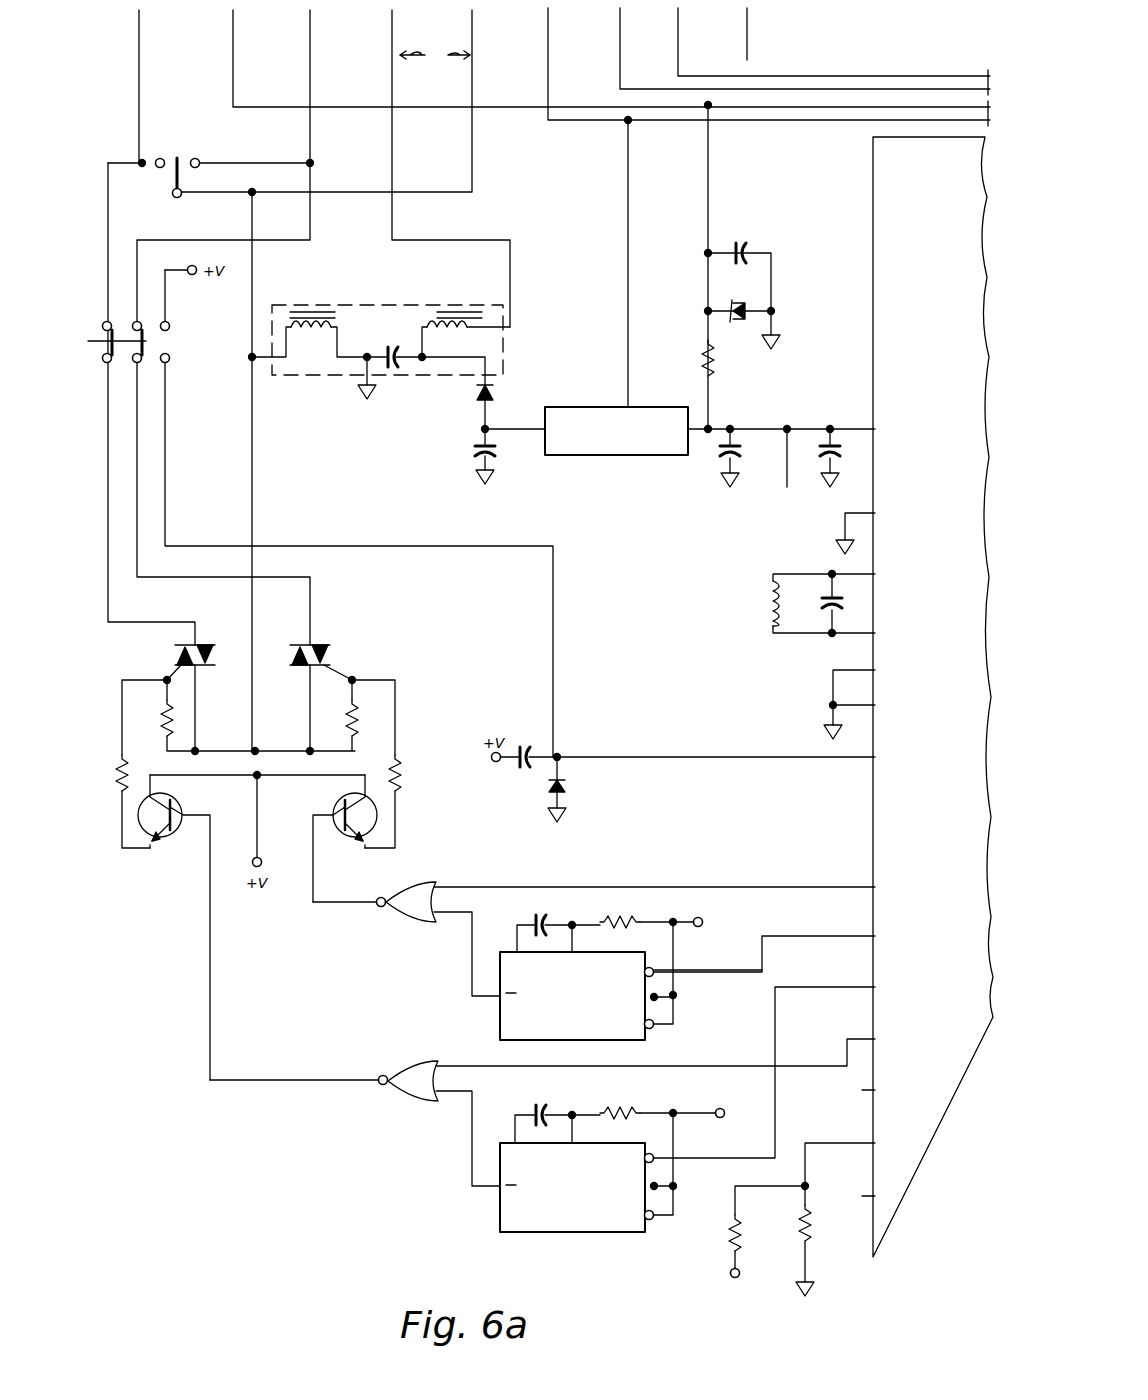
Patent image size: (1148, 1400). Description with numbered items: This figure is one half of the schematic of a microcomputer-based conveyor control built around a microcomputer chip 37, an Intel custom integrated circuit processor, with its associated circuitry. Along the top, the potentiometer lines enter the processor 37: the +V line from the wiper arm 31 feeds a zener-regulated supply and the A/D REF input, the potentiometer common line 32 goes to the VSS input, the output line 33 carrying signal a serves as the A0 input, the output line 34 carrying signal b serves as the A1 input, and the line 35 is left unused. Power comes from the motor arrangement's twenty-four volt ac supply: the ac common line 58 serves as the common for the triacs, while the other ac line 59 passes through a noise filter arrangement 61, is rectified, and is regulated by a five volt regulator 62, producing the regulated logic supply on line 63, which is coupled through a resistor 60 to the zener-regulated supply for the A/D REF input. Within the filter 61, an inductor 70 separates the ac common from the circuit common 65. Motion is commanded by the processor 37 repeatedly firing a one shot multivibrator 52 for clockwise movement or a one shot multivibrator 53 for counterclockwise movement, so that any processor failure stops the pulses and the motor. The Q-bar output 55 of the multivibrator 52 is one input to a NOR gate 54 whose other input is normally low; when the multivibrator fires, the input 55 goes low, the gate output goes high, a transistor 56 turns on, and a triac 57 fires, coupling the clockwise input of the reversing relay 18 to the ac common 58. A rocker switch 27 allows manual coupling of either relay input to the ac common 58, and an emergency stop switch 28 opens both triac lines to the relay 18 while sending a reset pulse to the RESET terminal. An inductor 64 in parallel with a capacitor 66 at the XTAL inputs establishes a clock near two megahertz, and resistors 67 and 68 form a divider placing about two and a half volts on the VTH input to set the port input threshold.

The reversing relay 18 is at (139, 35).
The rocker switch 27 is at (188, 158).
The emergency stop switch 28 is at (98, 327).
The potentiometer wiper arm line 31 is at (248, 50).
The potentiometer common line 32 is at (548, 30).
The potentiometer output line 33 is at (620, 32).
The potentiometer output line 34 is at (678, 26).
The unused potentiometer line 35 is at (747, 20).
The microcomputer chip 37 is at (873, 204).
The one shot multivibrator 52 is at (503, 1232).
The one shot multivibrator 53 is at (500, 1026).
The NOR gate 54 is at (405, 1103).
The Q-bar output 55 is at (472, 1190).
The transistor 56 is at (160, 858).
The triac 57 is at (205, 645).
The ac common line 58 is at (472, 68).
The ac line 59 is at (392, 72).
The resistor 60 is at (714, 357).
The noise filter arrangement 61 is at (360, 304).
The five volt regulator 62 is at (618, 460).
The regulated five volt supply line 63 is at (771, 428).
The inductor 64 is at (764, 612).
The circuit common 65 is at (350, 381).
The capacitor 66 is at (812, 607).
The resistor 67 is at (724, 1240).
The resistor 68 is at (790, 1240).
The inductor 70 is at (342, 321).